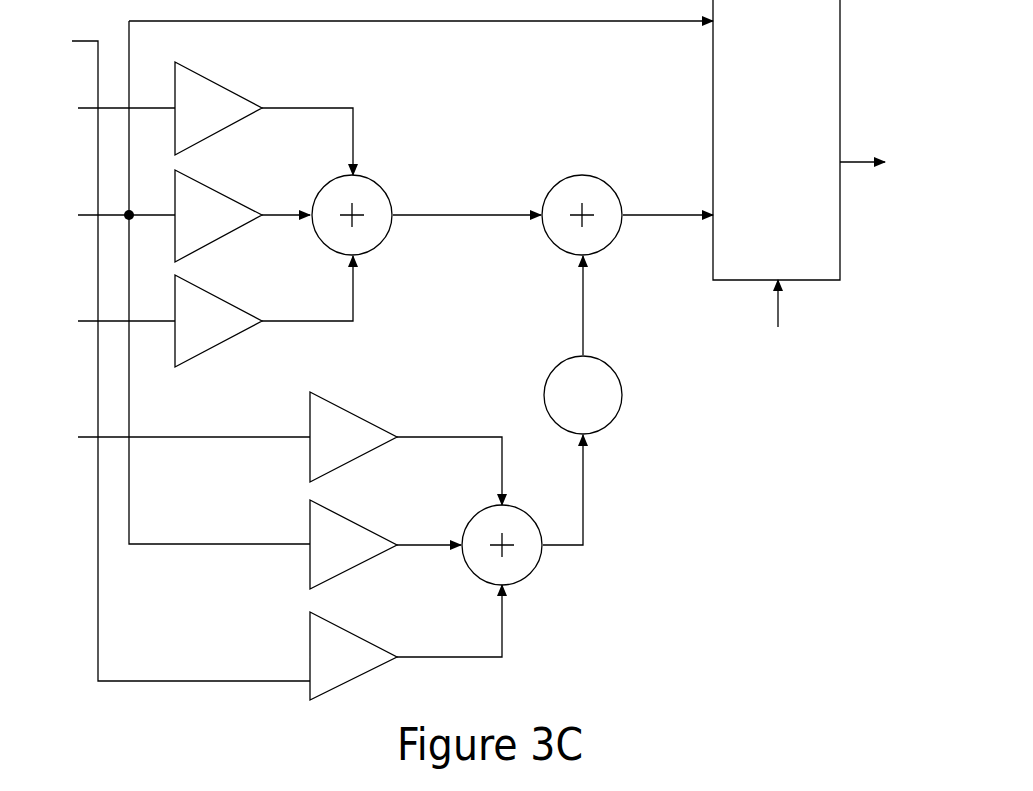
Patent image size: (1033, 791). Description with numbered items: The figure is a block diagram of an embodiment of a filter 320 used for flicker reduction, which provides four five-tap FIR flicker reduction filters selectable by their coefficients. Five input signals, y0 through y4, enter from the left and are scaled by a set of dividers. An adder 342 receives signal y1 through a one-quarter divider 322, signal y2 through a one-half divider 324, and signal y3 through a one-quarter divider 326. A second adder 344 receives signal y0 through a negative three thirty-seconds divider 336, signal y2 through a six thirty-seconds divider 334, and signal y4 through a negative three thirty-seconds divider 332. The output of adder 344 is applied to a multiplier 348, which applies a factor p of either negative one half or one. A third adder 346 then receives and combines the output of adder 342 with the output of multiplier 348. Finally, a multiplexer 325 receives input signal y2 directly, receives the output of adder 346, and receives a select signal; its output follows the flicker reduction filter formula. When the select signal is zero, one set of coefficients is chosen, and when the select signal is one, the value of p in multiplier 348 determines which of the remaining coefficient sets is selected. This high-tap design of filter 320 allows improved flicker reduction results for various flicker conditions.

The filter 320 is at (767, 588).
The ¼ divider 322 is at (213, 80).
The ½ divider 324 is at (213, 186).
The ¼ divider 326 is at (222, 298).
The −3/32 divider 332 is at (352, 408).
The 6/32 divider 334 is at (352, 517).
The −3/32 divider 336 is at (352, 630).
The adder 342 is at (380, 183).
The adder 344 is at (537, 563).
The adder 346 is at (582, 173).
The multiplier 348 is at (612, 368).
The multiplexer (MUX) 325 is at (840, 225).